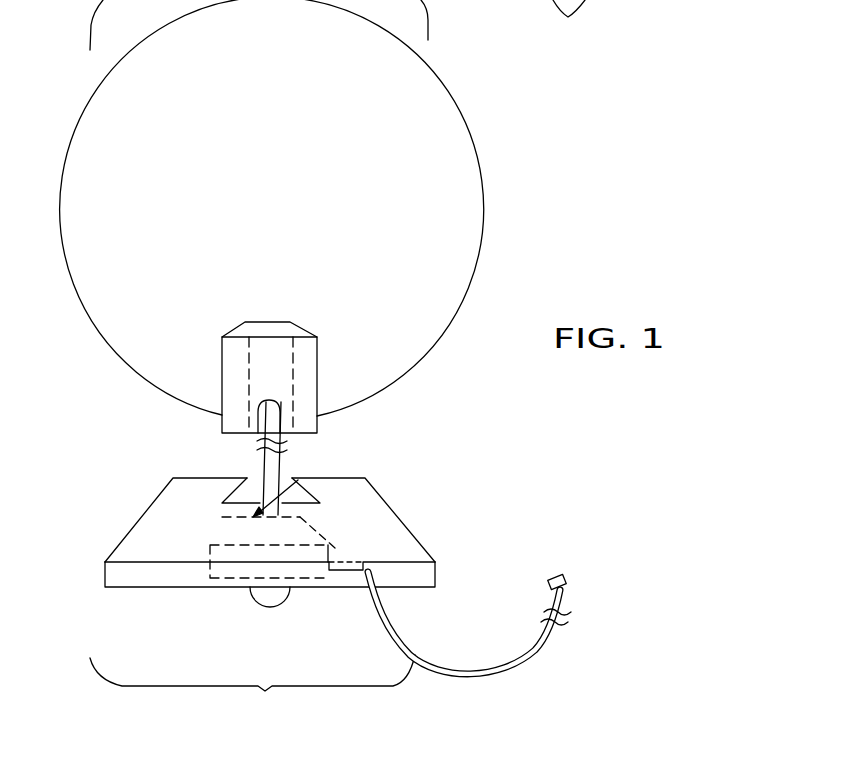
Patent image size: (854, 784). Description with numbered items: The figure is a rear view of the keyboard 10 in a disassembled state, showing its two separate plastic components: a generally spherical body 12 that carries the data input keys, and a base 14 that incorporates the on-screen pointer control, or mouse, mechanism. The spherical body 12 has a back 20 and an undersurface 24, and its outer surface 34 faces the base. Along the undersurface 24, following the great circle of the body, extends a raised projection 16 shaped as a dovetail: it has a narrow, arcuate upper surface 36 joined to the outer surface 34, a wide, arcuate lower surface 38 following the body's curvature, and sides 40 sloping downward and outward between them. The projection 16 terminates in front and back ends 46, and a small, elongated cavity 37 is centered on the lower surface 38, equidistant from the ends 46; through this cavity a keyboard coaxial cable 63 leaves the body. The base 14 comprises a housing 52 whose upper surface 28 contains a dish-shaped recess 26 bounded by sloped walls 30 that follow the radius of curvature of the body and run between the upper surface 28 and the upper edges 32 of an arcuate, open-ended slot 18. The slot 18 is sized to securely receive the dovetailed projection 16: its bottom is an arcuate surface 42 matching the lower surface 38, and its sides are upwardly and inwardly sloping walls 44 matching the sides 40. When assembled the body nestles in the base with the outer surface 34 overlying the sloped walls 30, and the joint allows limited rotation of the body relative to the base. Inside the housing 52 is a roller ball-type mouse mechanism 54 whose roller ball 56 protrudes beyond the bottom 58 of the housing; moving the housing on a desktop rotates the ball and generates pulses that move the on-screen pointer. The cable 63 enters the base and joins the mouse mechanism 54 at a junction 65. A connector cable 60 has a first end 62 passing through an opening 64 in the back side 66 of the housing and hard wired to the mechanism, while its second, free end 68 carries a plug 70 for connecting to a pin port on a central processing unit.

The keyboard 10 is at (538, 233).
The spherical body 12 is at (440, 74).
The base 14 is at (135, 516).
The raised projection 16 is at (320, 422).
The arcuate slot 18 is at (289, 479).
The back 20 is at (292, 82).
The undersurface 24 is at (203, 390).
The dish-shaped recess 26 is at (196, 463).
The upper surface 28 is at (175, 478).
The sloped walls 30 is at (198, 481).
The upper edges 32 is at (255, 512).
The outer surface 34 is at (173, 403).
The upper surface 36 is at (296, 363).
The cavity 37 is at (270, 408).
The lower surface 38 is at (300, 381).
The sides 40 is at (240, 328).
The arcuate surface 42 is at (303, 536).
The sloping walls 44 is at (261, 531).
The ends 46 is at (268, 332).
The housing 52 is at (376, 496).
The mouse mechanism 54 is at (240, 590).
The roller ball 56 is at (285, 592).
The bottom 58 is at (146, 590).
The connector cable 60 is at (401, 641).
The first end 62 is at (337, 562).
The keyboard coaxial cable 63 is at (262, 444).
The opening 64 is at (380, 579).
The junction 65 is at (320, 547).
The back side 66 is at (178, 559).
The second free end 68 is at (568, 600).
The plug 70 is at (565, 575).